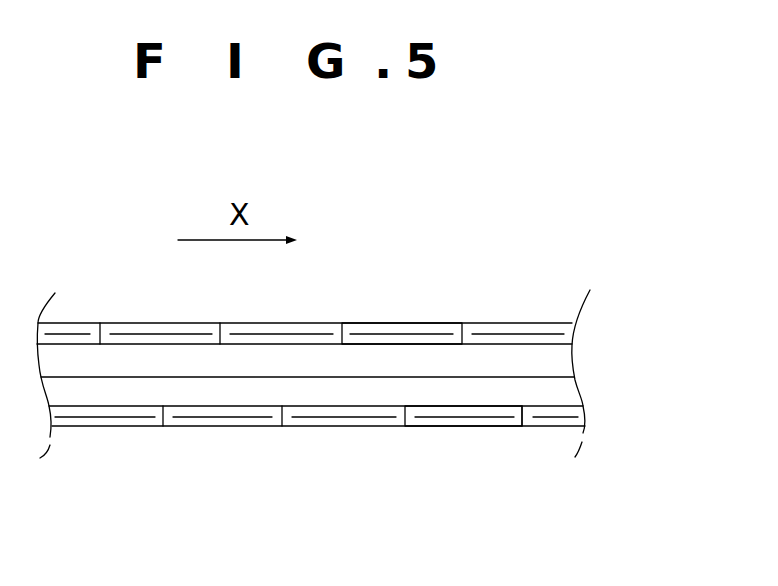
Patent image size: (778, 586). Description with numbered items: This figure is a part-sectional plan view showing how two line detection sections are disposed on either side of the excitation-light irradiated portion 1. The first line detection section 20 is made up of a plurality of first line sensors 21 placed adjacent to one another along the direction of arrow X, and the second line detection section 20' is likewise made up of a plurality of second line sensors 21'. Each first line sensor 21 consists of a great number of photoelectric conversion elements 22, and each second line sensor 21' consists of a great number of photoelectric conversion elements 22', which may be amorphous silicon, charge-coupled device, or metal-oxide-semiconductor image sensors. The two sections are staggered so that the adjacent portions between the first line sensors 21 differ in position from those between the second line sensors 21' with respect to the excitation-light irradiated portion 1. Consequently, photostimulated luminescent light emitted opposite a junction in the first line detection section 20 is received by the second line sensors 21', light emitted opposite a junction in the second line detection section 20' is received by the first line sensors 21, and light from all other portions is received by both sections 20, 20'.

The excitation-light irradiated portion 1 is at (520, 376).
The first line detection section 20 is at (356, 473).
The second line detection section 20' is at (347, 282).
The first line sensor 21 is at (463, 473).
The second line sensor 21' is at (442, 287).
The photoelectric conversion element 22 is at (461, 479).
The photoelectric conversion element 22' is at (401, 282).